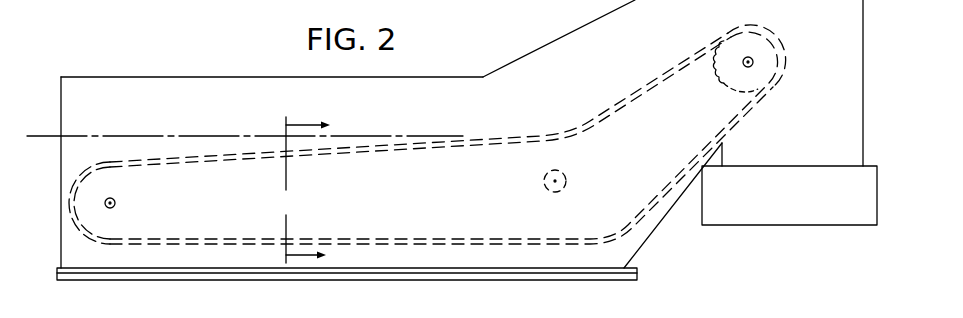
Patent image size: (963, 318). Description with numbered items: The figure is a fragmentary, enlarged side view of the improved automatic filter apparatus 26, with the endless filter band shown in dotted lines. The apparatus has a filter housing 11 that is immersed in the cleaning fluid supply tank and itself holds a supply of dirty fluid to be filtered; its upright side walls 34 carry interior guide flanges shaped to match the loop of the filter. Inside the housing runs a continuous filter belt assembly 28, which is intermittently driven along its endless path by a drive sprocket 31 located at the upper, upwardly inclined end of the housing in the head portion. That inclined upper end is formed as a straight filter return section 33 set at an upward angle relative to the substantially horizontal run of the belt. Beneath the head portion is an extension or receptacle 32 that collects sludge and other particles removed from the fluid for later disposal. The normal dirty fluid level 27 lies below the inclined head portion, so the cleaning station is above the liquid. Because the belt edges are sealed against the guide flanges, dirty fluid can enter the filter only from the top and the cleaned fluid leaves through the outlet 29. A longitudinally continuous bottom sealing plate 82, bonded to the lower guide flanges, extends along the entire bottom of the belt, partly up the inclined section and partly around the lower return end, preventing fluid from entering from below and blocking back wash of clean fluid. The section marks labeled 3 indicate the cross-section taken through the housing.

The filter housing 11 is at (460, 140).
The fluid level 27 is at (36, 136).
The side walls 34 is at (218, 93).
The automatic filter apparatus 26 is at (557, 34).
The straight filter return section 33 is at (404, 134).
The continuous filter belt assembly 28 is at (418, 143).
The bottom sealing plate 82 is at (80, 178).
The drive sprocket 31 is at (732, 88).
The outlet 29 is at (553, 192).
The receptacle 32 is at (789, 214).
The section line 3- 3 is at (320, 190).